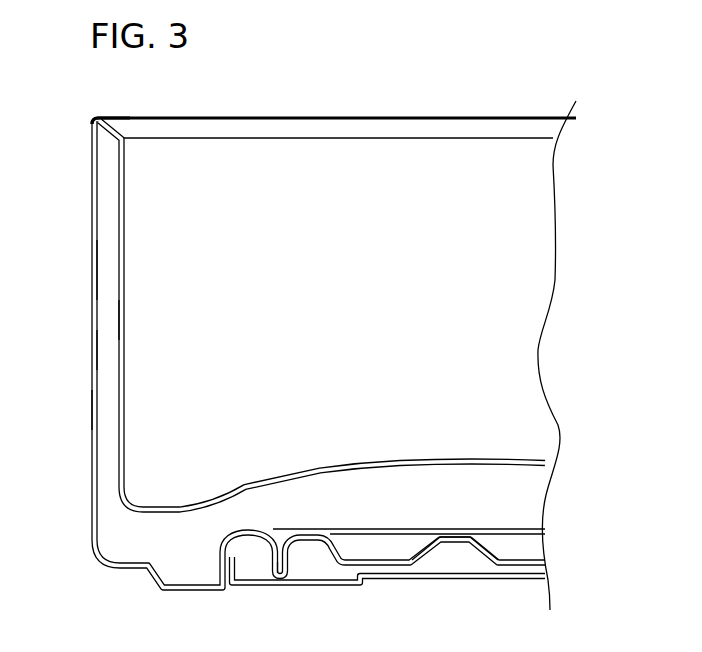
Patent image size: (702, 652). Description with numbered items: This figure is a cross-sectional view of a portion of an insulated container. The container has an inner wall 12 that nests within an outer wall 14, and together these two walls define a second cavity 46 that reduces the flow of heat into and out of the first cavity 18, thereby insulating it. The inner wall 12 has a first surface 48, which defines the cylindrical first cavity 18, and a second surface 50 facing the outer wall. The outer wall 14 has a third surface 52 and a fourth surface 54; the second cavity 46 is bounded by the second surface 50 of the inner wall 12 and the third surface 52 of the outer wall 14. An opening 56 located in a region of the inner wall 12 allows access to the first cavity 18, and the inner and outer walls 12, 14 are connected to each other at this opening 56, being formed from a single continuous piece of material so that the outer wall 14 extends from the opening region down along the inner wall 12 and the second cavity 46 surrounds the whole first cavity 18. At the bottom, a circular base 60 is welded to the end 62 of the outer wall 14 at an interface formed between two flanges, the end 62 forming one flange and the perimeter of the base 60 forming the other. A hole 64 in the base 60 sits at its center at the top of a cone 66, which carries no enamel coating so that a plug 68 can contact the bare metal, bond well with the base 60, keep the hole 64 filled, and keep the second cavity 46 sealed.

The inner wall 12 is at (119, 191).
The outer wall 14 is at (97, 283).
The first cavity 18 is at (234, 170).
The second cavity 46 is at (110, 238).
The first surface 48 is at (125, 222).
The second surface 50 is at (118, 318).
The third surface 52 is at (100, 352).
The fourth surface 54 is at (92, 408).
The opening 56 is at (124, 118).
The base 60 is at (520, 560).
The end 62 is at (272, 570).
The hole 64 is at (455, 538).
The cone 66 is at (480, 562).
The plug 68 is at (442, 541).